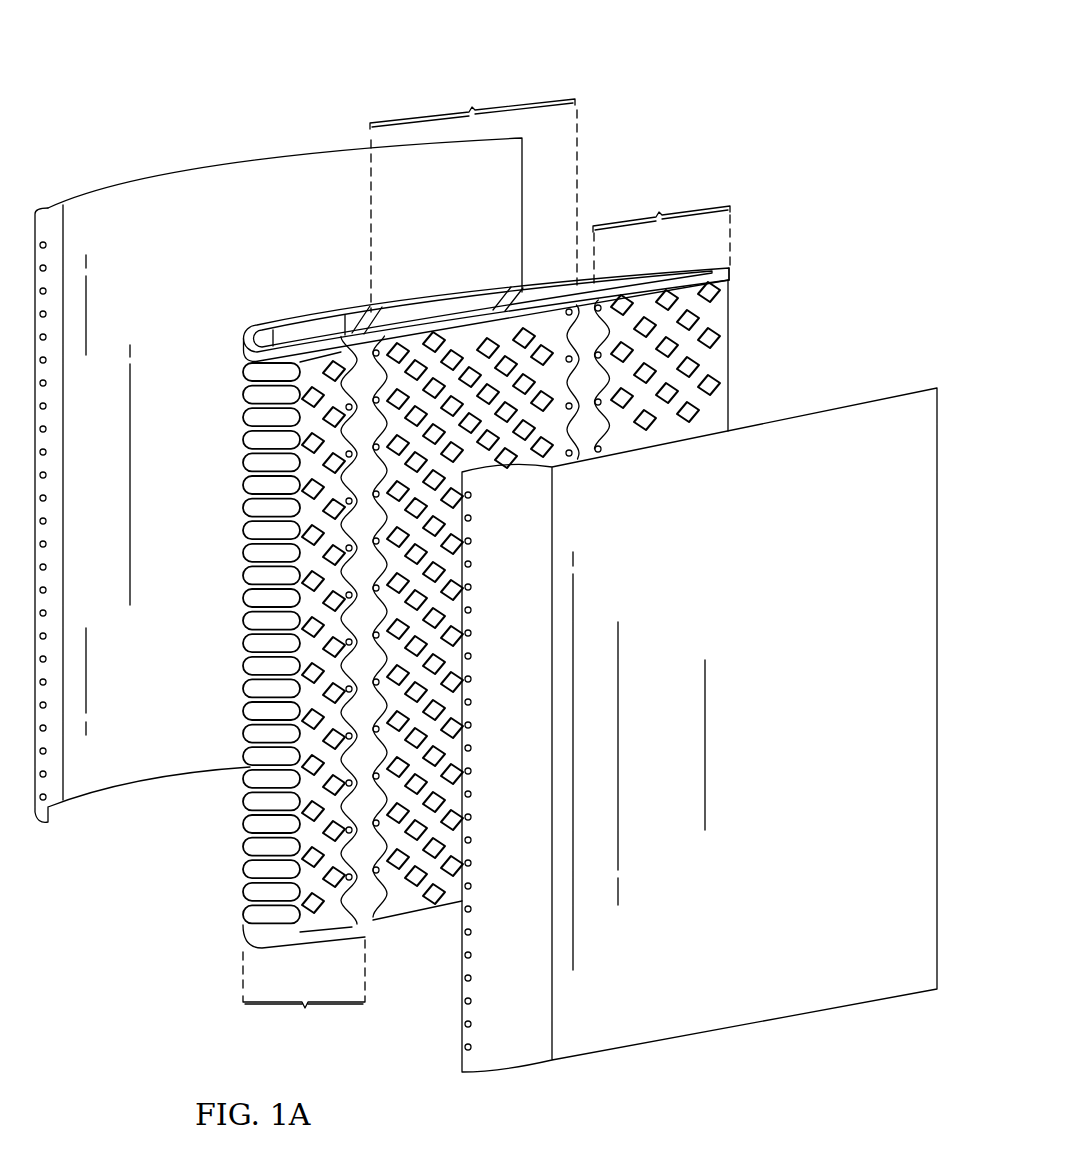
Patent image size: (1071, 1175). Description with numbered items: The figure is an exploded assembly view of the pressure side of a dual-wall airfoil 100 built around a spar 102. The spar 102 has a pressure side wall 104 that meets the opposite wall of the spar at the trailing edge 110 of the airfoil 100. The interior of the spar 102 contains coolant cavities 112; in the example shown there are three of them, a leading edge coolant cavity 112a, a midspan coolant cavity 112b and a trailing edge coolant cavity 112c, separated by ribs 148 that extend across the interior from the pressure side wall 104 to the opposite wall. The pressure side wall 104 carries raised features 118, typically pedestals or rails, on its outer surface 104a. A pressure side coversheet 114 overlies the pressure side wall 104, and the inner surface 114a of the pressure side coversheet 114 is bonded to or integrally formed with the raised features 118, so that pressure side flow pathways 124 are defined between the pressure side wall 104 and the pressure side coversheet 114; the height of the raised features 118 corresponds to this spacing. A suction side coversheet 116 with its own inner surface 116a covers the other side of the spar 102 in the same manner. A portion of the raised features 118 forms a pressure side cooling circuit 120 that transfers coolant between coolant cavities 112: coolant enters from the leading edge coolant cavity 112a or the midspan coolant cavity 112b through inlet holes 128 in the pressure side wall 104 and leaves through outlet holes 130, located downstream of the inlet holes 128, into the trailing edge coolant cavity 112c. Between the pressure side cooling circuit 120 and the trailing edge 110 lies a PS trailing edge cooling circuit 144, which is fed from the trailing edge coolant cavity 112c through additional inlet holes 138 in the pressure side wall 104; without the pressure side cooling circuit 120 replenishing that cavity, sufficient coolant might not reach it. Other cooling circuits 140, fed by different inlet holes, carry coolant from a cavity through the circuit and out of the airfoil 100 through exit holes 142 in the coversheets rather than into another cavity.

The dual-wall airfoil 100 is at (660, 77).
The spar 102 is at (216, 320).
The pressure side wall 104 is at (703, 356).
The outer surface 104a is at (722, 321).
The trailing edge 110 is at (758, 252).
The coolant cavities 112 is at (482, 257).
The leading edge coolant cavity 112a is at (300, 323).
The midspan coolant cavity 112b is at (455, 300).
The trailing edge coolant cavity 112c is at (537, 277).
The pressure side coversheet 114 is at (661, 710).
The inner surface 114a is at (845, 403).
The suction side coversheet 116 is at (278, 469).
The inner surface 116a is at (215, 176).
The raised features 118 is at (483, 624).
The pressure side cooling circuit 120 is at (473, 195).
The pressure side flow pathways 124 is at (410, 358).
The inlet holes 128 is at (378, 544).
The outlet holes 130 is at (566, 302).
The additional inlet holes 138 is at (633, 302).
The other cooling circuits 140 is at (304, 991).
The exit holes 142 is at (471, 795).
The PS trailing edge cooling circuit 144 is at (661, 232).
The ribs 148 is at (372, 333).